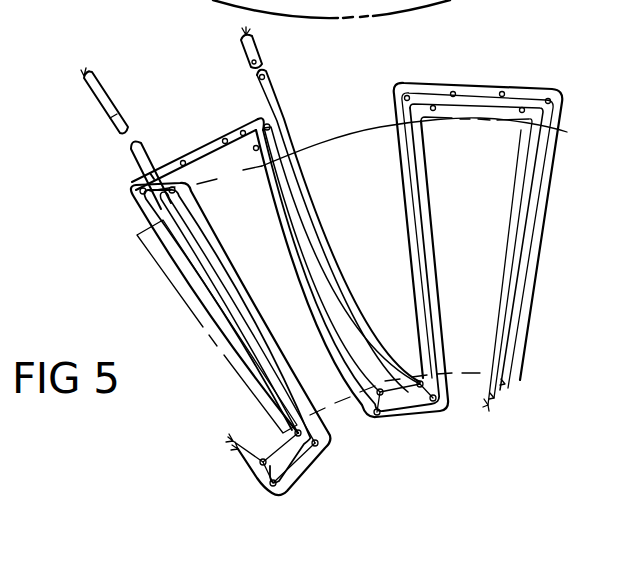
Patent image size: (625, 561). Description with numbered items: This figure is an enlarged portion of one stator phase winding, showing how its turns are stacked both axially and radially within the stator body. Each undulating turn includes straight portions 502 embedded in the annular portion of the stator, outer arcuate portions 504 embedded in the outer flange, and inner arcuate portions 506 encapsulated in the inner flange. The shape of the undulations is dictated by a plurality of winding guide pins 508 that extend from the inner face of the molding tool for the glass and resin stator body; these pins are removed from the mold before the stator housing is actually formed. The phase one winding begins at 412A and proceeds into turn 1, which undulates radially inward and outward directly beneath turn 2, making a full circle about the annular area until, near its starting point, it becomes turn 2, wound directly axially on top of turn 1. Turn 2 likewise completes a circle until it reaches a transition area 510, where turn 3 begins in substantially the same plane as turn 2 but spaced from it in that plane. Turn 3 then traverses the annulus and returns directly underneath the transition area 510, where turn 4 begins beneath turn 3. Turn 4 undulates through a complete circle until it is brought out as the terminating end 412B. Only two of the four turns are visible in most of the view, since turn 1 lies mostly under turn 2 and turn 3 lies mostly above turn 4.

The turn 1 is at (270, 89).
The turn 2 is at (187, 153).
The turn 3 is at (208, 262).
The turn 4 is at (128, 165).
The beginning of the winding 412A is at (256, 47).
The terminating end 412B is at (112, 112).
The straight portions 502 is at (453, 222).
The outer arcuate portions 504 is at (470, 82).
The inner arcuate portions 506 is at (449, 412).
The winding guide pins 508 is at (140, 192).
The transition area 510 is at (241, 134).